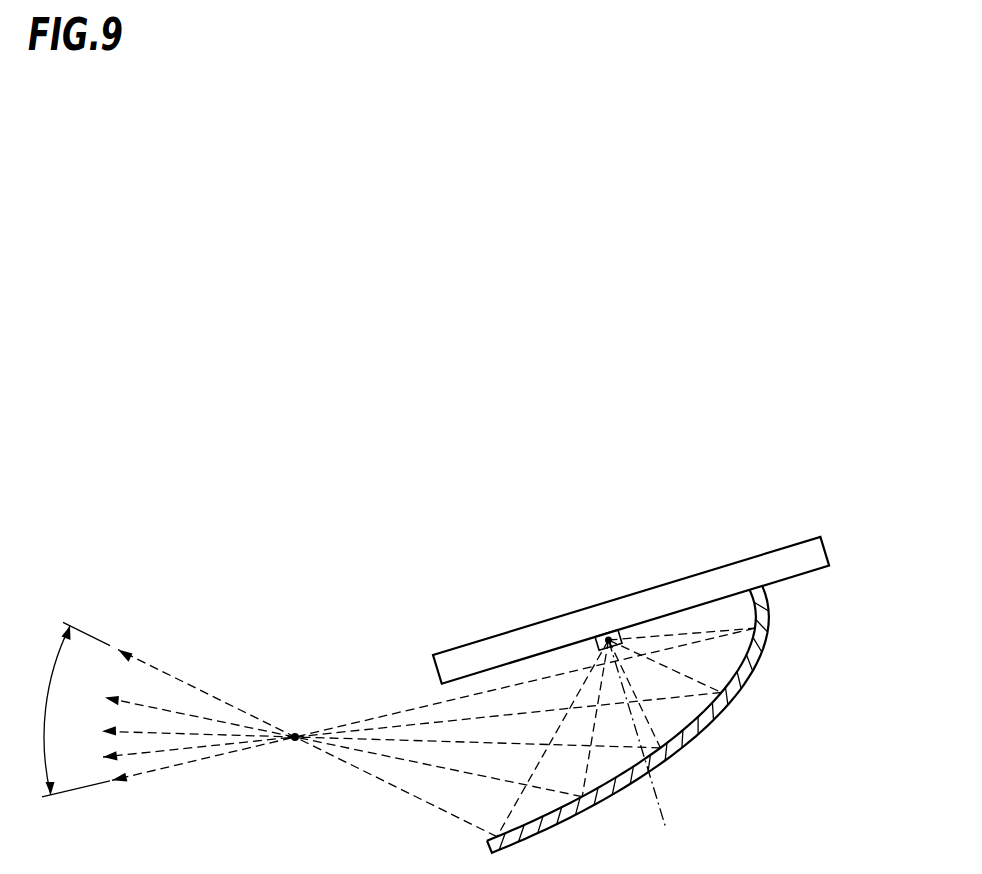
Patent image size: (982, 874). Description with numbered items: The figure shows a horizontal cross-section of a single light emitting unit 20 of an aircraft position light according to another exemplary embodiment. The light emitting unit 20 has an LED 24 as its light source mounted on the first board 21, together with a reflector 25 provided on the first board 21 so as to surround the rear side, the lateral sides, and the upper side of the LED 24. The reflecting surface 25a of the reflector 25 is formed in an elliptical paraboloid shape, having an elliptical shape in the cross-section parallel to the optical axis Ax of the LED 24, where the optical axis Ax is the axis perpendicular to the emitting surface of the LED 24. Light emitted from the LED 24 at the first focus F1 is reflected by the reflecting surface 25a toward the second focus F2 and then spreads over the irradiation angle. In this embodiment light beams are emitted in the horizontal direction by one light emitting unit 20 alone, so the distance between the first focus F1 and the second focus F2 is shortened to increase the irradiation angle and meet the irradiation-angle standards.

The light emitting unit 20 is at (792, 645).
The first board 21 is at (470, 643).
The LED 24 is at (596, 645).
The reflector 25 is at (646, 719).
The reflecting surface 25a is at (680, 716).
The first focus F1 is at (632, 631).
The second focus F2 is at (295, 733).
The optical axis Ax is at (650, 751).